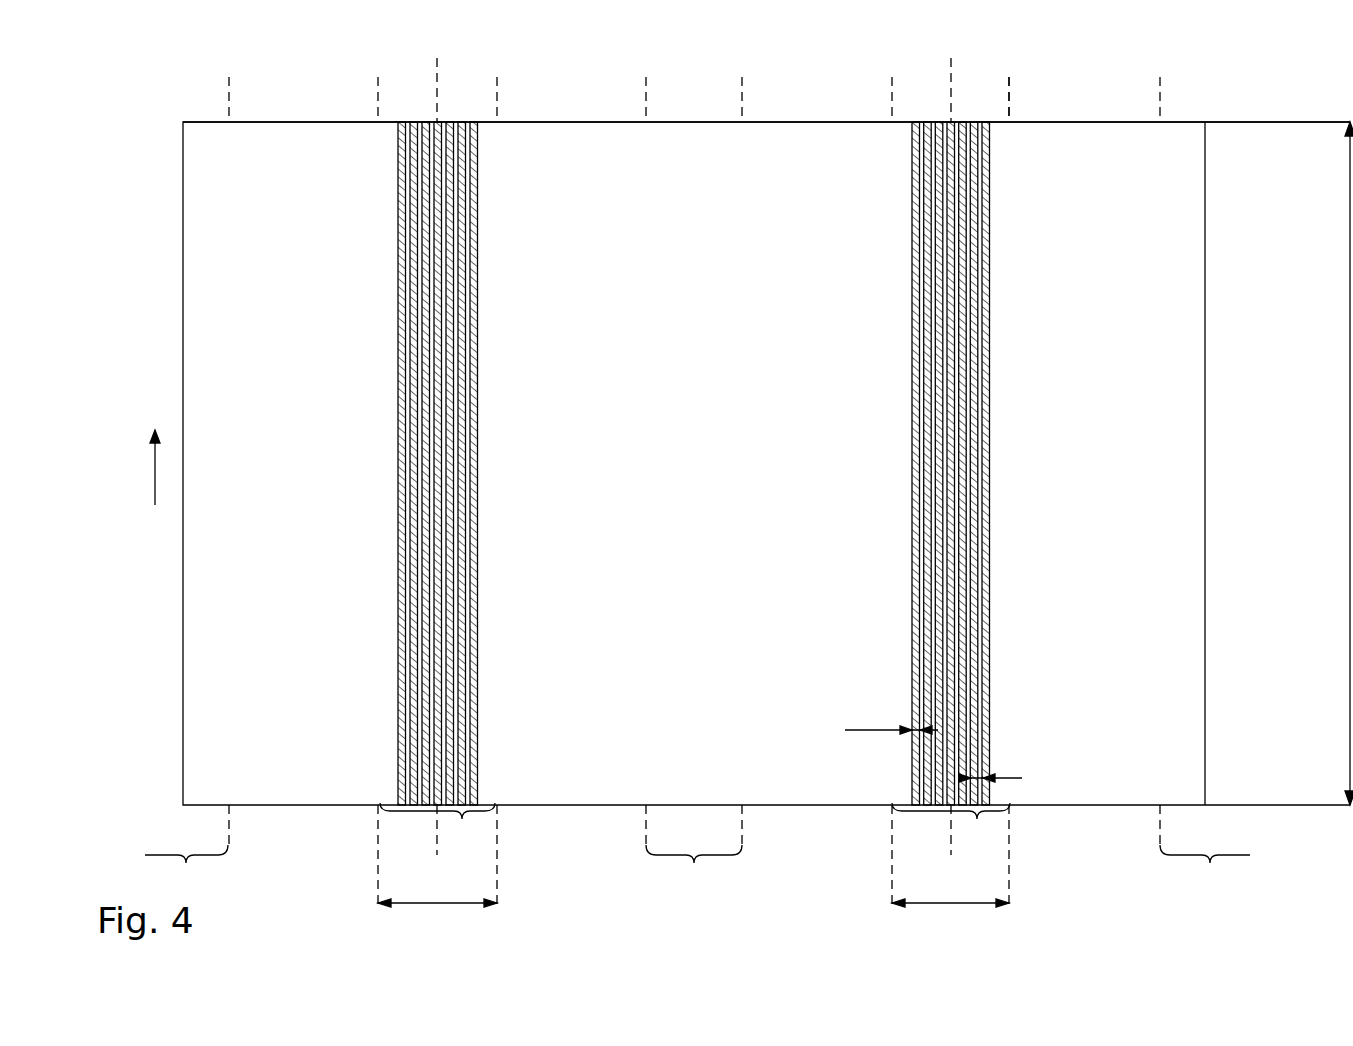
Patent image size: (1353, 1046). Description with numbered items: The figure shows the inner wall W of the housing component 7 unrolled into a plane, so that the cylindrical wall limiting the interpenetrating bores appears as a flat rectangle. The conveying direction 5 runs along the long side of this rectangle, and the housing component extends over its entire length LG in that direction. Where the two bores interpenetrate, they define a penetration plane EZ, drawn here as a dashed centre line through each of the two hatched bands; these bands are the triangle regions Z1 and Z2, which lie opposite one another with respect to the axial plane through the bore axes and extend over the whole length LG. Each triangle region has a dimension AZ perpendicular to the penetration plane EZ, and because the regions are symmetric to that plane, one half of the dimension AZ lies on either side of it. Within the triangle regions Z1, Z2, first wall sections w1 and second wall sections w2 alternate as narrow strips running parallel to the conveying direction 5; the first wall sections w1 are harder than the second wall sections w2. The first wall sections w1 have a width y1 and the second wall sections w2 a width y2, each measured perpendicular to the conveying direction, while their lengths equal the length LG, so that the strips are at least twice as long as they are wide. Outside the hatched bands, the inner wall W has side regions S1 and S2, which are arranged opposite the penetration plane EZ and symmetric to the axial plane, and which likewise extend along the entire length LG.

The inner wall W is at (180, 278).
The housing component 7 is at (269, 104).
The conveying direction 5 is at (153, 468).
The triangle region Z2 is at (437, 491).
The triangle region Z1 is at (951, 490).
The first wall section w1 is at (208, 132).
The second wall section w2 is at (475, 128).
The penetration plane EZ is at (699, 444).
The side region S2 is at (697, 853).
The side region S1 is at (694, 853).
The dimension of the triangle regions AZ is at (693, 856).
The width of the second wall sections y2 is at (891, 716).
The width of the first wall sections y1 is at (990, 764).
The length of the housing component LG is at (1290, 463).